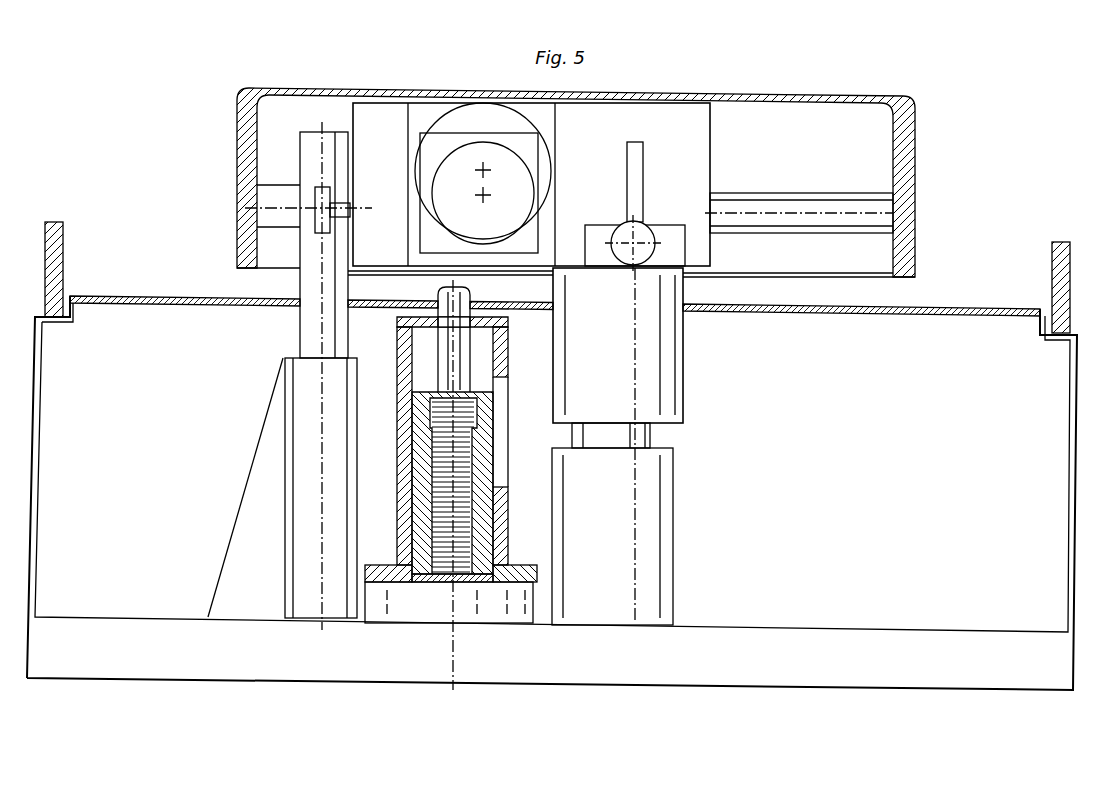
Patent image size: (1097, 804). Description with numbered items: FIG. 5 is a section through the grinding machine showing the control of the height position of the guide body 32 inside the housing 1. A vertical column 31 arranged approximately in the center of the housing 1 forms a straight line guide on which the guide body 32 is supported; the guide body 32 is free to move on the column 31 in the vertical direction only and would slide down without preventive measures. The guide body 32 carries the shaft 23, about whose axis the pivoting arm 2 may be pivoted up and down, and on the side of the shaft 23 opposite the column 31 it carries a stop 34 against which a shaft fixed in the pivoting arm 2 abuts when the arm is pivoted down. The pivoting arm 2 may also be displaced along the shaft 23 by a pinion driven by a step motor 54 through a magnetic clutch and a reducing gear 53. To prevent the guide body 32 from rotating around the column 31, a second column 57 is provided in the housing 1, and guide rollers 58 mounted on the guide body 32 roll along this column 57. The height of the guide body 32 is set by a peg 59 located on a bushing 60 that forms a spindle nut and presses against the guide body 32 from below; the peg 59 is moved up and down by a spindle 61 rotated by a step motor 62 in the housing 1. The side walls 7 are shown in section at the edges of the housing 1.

The housing 1 is at (158, 297).
The pivoting arm 2 is at (366, 90).
The side wall 7 is at (63, 251).
The shaft 23 is at (277, 220).
The column 31 is at (653, 438).
The guide body 32 is at (695, 153).
The stop 34 is at (642, 232).
The reducing gear 53 is at (448, 123).
The step motor 54 is at (457, 217).
The second column 57 is at (308, 142).
The guide rollers 58 is at (318, 205).
The peg 59 is at (447, 361).
The bushing 60 is at (483, 428).
The spindle 61 is at (442, 485).
The step motor 62 is at (414, 618).